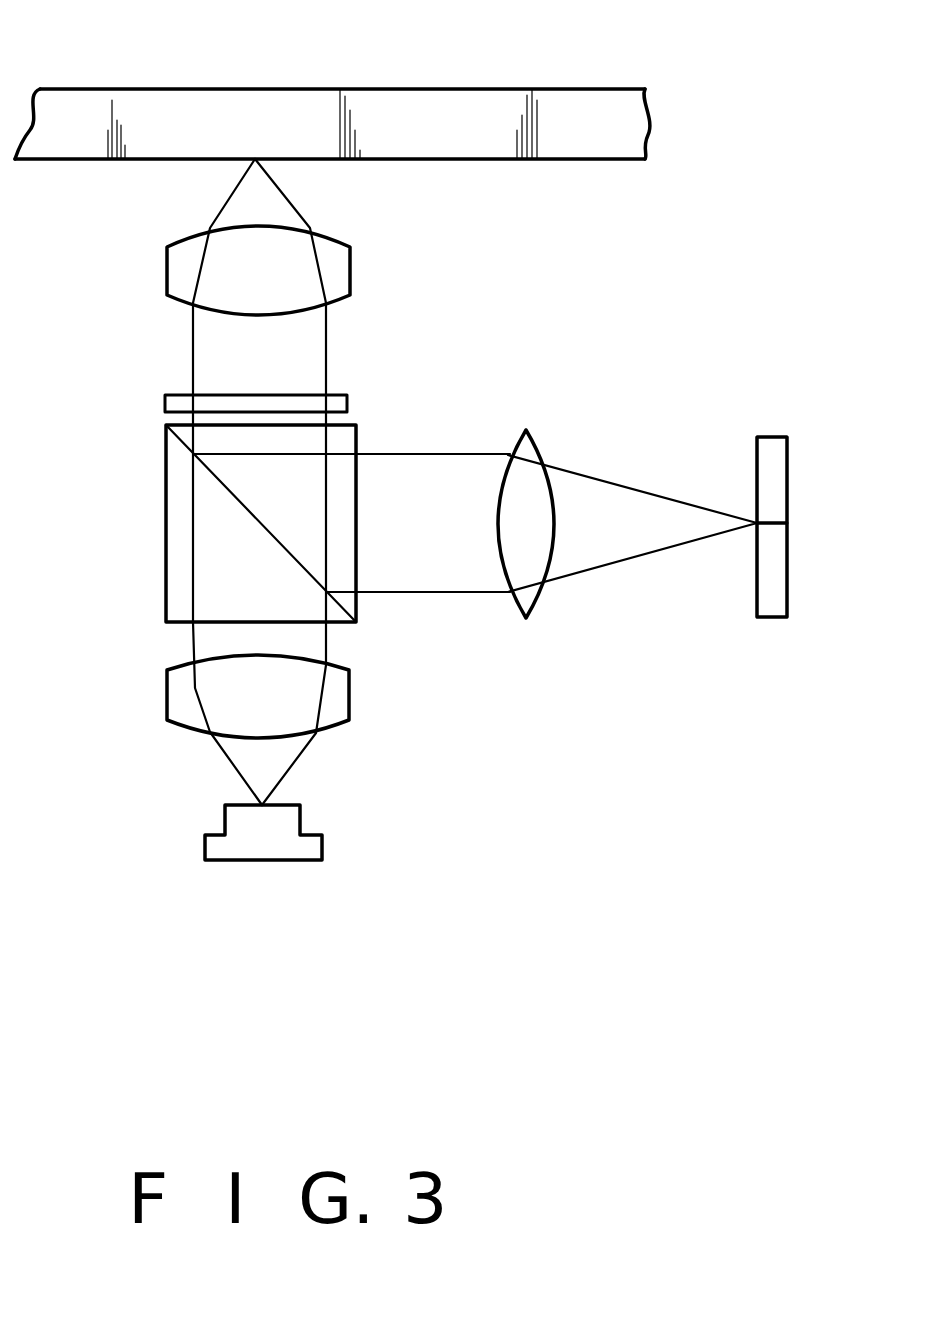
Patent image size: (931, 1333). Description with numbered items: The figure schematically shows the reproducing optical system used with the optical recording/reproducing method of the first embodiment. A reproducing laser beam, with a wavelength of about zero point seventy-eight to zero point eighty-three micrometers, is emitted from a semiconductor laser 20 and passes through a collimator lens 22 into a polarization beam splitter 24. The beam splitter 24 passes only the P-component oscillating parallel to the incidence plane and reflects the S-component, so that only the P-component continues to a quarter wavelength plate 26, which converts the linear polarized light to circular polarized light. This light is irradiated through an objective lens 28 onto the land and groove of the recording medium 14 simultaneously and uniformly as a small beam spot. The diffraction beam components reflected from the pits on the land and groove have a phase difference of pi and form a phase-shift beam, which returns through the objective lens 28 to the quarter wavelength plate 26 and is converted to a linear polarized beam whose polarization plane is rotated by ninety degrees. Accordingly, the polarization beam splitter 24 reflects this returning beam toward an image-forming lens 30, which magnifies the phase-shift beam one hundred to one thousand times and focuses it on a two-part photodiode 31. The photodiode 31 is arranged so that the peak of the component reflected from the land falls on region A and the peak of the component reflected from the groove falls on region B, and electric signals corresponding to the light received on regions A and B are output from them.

The recording medium 14 is at (568, 89).
The semiconductor laser 20 is at (257, 850).
The collimator lens 22 is at (167, 700).
The polarization beam splitter 24 is at (165, 543).
The ¼ wavelength plate 26 is at (165, 404).
The objective lens 28 is at (167, 285).
The image-forming lens 30 is at (538, 442).
The two-part photodiode 31 is at (768, 438).
The region A is at (772, 494).
The region B is at (772, 588).